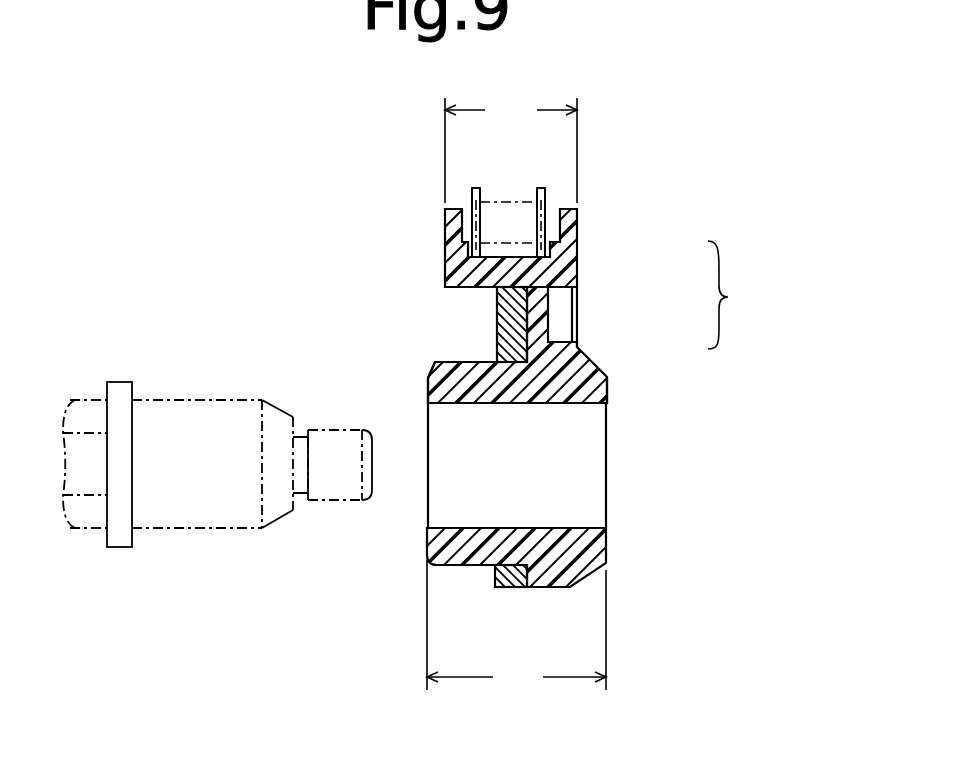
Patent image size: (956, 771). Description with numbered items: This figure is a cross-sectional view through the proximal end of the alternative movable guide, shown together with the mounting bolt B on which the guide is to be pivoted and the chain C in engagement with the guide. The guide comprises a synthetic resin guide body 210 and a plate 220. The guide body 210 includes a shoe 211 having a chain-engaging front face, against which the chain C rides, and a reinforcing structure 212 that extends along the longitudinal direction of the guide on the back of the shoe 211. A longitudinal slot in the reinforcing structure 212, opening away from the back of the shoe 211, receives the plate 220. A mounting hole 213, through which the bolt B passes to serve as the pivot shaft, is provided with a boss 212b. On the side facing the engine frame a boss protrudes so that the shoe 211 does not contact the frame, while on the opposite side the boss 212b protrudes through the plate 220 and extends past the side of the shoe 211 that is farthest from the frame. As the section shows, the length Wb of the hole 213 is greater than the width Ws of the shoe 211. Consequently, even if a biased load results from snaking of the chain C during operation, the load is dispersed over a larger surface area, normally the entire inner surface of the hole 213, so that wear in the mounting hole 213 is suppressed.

The guide body 210 is at (798, 314).
The shoe 211 is at (577, 278).
The reinforcing structure 212 is at (540, 325).
The boss 212b is at (455, 545).
The mounting hole 213 is at (553, 403).
The plate 220 is at (497, 322).
The bolt B is at (195, 397).
The chain C is at (514, 197).
The width of the shoe Ws is at (511, 147).
The length of the hole Wb is at (516, 625).